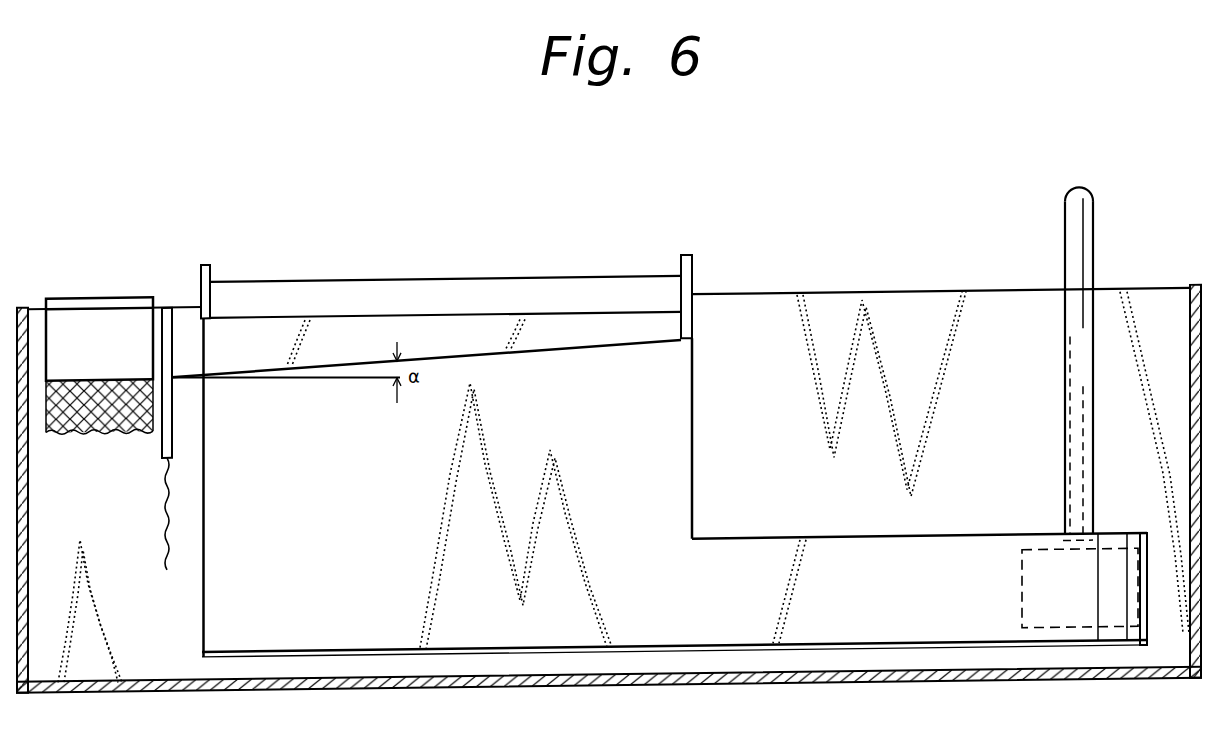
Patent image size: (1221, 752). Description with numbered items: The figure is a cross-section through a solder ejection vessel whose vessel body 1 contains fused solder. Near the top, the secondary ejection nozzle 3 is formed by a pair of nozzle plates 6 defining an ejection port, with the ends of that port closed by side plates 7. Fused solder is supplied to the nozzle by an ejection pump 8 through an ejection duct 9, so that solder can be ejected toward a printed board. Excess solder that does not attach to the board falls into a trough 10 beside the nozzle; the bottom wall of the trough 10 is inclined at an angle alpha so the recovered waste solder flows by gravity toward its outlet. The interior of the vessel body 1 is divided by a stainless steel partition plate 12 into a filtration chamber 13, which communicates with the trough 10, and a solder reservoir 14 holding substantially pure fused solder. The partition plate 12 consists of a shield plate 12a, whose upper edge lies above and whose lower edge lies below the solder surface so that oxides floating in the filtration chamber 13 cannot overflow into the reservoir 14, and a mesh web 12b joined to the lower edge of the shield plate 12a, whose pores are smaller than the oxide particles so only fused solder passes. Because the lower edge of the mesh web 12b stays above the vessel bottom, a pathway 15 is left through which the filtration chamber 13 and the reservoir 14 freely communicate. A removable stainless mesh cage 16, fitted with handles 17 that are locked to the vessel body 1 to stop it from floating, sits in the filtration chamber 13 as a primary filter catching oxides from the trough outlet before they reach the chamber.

The vessel body 1 is at (571, 693).
The secondary ejection nozzle 3 is at (530, 284).
The nozzle plate 6 is at (677, 469).
The side plate 7 is at (203, 266).
The ejection pump 8 is at (1022, 591).
The ejection duct 9 is at (841, 559).
The trough 10 is at (585, 344).
The partition plate 12 is at (259, 437).
The shield plate 12a is at (172, 345).
The mesh web 12b is at (167, 487).
The filtration chamber 13 is at (85, 657).
The solder reservoir 14 is at (415, 638).
The pathway 15 is at (175, 631).
The cage 16 is at (110, 439).
The handle 17 is at (76, 299).